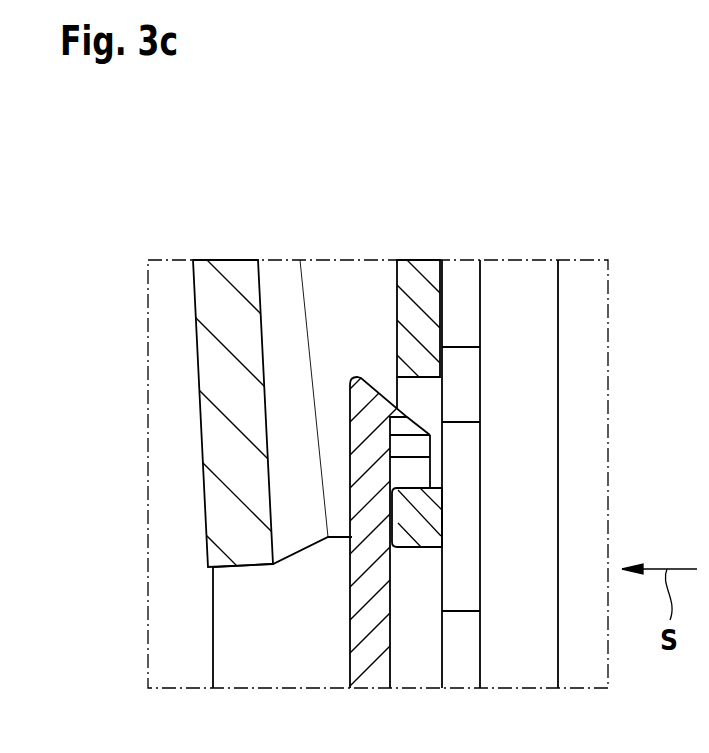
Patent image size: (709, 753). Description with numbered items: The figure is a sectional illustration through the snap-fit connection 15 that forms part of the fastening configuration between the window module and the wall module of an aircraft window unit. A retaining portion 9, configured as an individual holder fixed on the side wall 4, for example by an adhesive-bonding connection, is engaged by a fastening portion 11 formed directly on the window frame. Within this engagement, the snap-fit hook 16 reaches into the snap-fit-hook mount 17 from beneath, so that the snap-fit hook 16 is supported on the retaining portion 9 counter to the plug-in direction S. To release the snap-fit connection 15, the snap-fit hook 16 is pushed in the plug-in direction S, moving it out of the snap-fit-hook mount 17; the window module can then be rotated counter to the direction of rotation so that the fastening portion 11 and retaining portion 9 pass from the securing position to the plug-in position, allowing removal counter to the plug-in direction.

The side wall 4 is at (177, 628).
The retaining portion 9 is at (223, 300).
The fastening portion 11 is at (460, 300).
The snap-fit connection 15 is at (472, 463).
The snap-fit hook 16 is at (372, 663).
The snap-fit-hook mount 17 is at (418, 400).